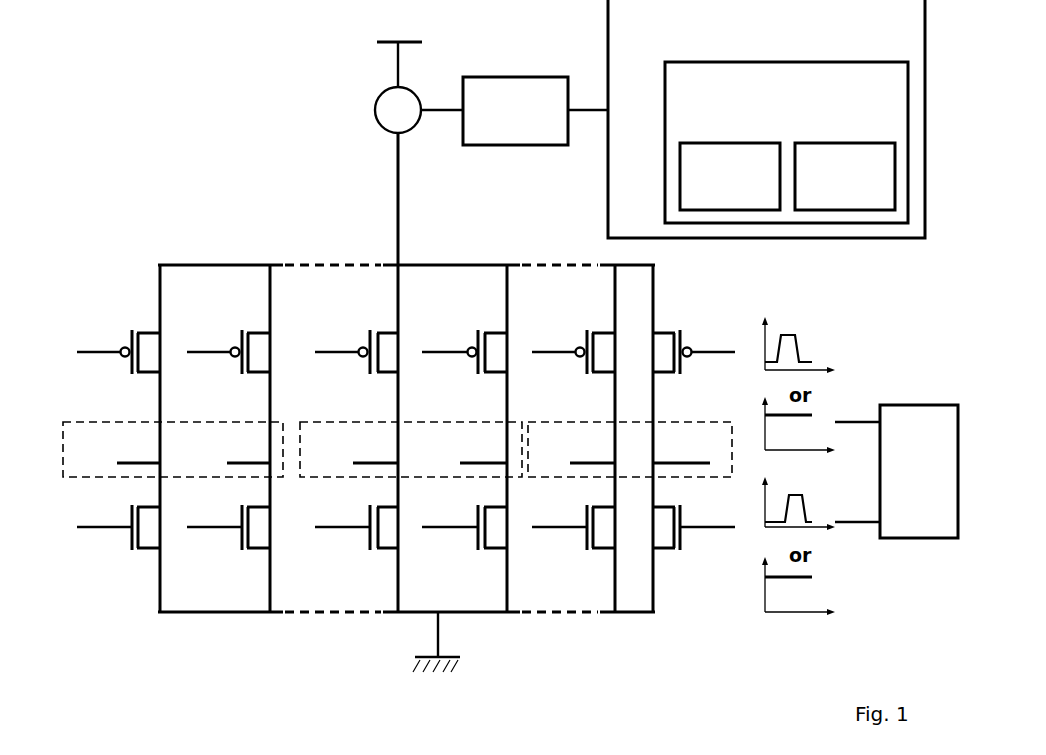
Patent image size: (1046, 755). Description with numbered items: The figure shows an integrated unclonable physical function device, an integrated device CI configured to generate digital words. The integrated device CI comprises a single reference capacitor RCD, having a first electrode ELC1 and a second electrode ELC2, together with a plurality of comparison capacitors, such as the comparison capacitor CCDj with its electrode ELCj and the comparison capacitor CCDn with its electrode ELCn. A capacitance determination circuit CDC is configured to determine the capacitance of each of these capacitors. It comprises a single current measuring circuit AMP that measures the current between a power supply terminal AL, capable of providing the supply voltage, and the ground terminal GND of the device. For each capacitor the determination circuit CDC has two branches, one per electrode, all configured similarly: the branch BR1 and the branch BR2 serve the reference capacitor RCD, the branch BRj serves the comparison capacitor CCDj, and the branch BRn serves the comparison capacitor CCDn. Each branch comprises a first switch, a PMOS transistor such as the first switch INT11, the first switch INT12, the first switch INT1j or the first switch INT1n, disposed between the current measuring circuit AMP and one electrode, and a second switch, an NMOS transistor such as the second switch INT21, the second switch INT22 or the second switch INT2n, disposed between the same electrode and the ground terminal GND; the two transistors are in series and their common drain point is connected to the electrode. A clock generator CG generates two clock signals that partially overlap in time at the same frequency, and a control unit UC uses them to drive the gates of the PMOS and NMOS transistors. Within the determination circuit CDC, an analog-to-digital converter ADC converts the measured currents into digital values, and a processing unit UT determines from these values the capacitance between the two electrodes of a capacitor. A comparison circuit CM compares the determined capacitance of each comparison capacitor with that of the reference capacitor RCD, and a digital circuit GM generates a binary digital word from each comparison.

The capacitance determination circuit CDC is at (129, 184).
The integrated device CI is at (118, 617).
The power supply terminal AL is at (378, 49).
The current measuring circuit AMP is at (376, 110).
The analog-to-digital converter ADC is at (541, 123).
The control unit UC is at (672, 29).
The processing unit UT is at (730, 108).
The comparison circuit CM is at (750, 189).
The digital circuit GM is at (866, 189).
The clock generator CG is at (938, 484).
The first switch INT1n is at (259, 331).
The first switch INT1j is at (463, 350).
The first switch INT12 is at (602, 331).
The first switch INT11 is at (665, 331).
The comparison capacitor CCDn is at (130, 421).
The comparison capacitor CCDj is at (388, 421).
The reference capacitor RCD is at (599, 421).
The electrode ELCn is at (230, 450).
The electrode ELCj is at (468, 450).
The second electrode ELC2 is at (576, 450).
The first electrode ELC1 is at (687, 450).
The second switch INT2n is at (259, 548).
The branch BRj is at (497, 548).
The second switch INT22 is at (603, 548).
The second switch INT21 is at (665, 548).
The branch BRn is at (267, 600).
The branch BR2 is at (612, 600).
The branch BR1 is at (660, 600).
The ground terminal GND is at (414, 662).